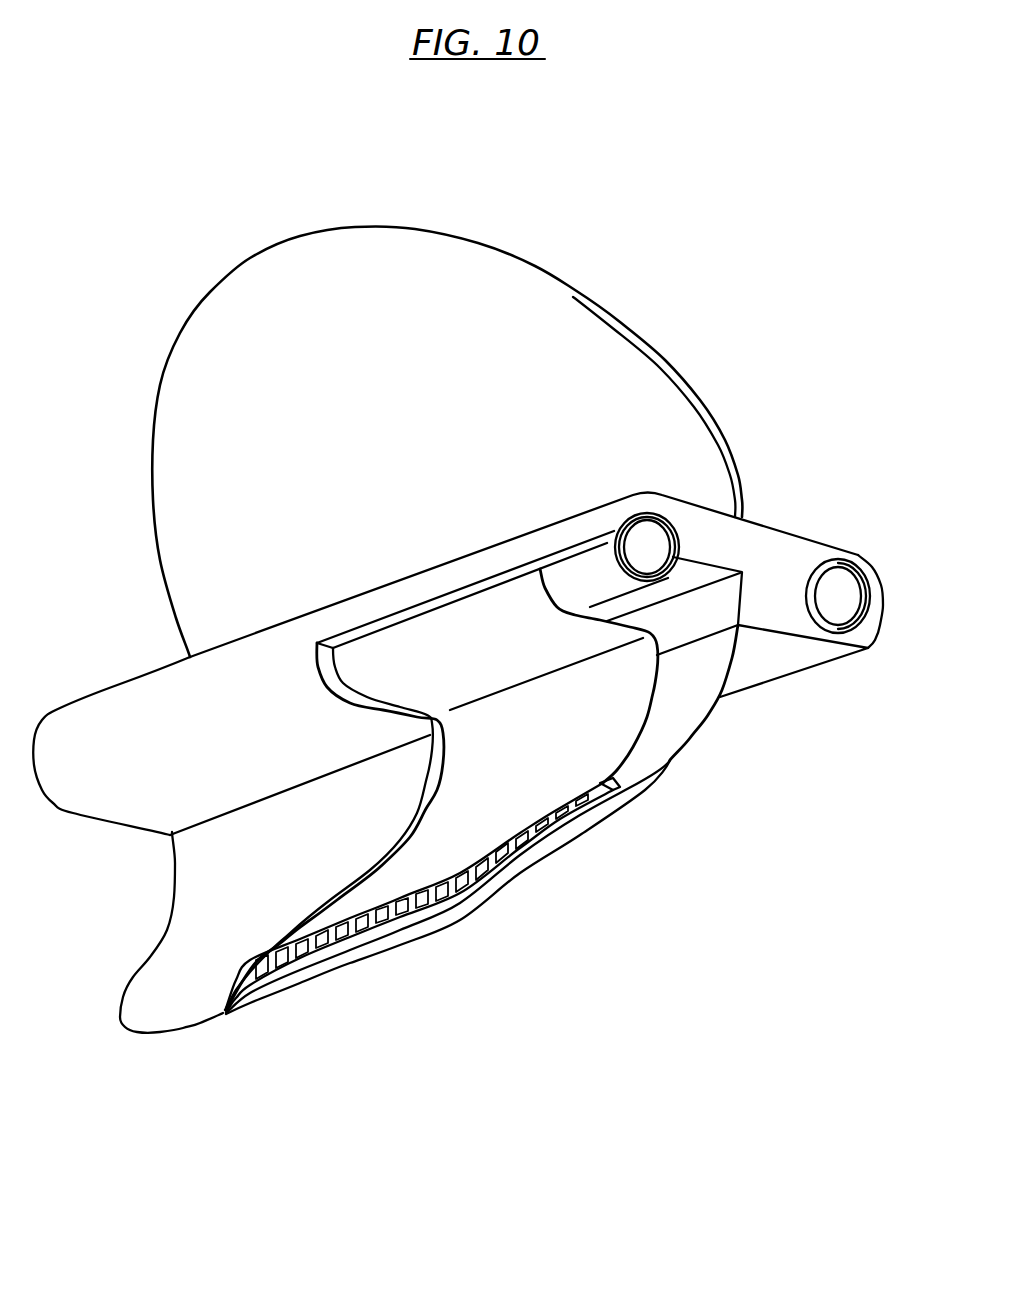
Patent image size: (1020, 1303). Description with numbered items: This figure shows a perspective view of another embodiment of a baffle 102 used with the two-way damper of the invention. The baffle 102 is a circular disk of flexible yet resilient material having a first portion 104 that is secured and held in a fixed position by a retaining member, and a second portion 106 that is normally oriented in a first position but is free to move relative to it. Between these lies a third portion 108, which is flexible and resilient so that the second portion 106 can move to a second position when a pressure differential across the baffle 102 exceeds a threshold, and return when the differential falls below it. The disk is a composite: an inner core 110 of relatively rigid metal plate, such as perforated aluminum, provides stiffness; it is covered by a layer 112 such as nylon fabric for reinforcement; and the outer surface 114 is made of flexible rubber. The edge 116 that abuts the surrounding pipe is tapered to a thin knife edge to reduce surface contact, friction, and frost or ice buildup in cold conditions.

The baffle 102 is at (577, 297).
The first portion 104 is at (768, 616).
The second portion 106 is at (224, 1016).
The third portion 108 is at (637, 792).
The inner core 110 is at (297, 940).
The layer 112 is at (407, 873).
The outer surface 114 is at (548, 857).
The edge 116 is at (132, 1030).